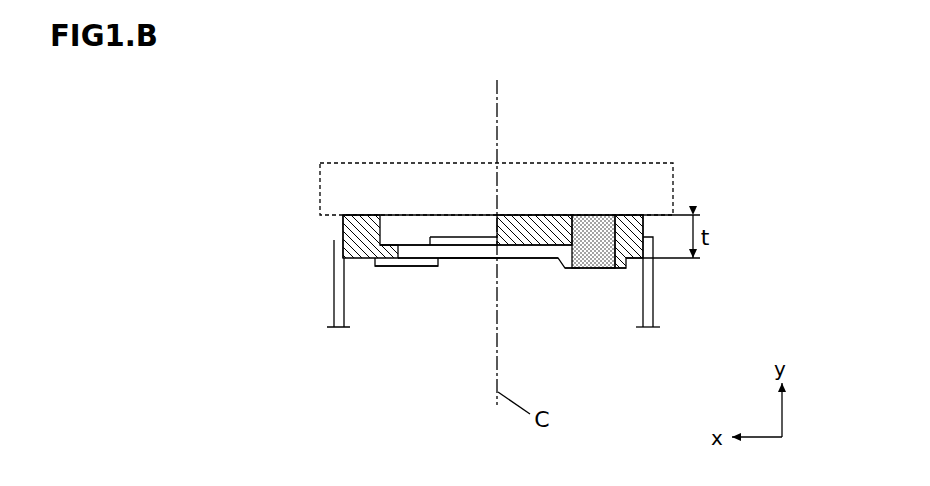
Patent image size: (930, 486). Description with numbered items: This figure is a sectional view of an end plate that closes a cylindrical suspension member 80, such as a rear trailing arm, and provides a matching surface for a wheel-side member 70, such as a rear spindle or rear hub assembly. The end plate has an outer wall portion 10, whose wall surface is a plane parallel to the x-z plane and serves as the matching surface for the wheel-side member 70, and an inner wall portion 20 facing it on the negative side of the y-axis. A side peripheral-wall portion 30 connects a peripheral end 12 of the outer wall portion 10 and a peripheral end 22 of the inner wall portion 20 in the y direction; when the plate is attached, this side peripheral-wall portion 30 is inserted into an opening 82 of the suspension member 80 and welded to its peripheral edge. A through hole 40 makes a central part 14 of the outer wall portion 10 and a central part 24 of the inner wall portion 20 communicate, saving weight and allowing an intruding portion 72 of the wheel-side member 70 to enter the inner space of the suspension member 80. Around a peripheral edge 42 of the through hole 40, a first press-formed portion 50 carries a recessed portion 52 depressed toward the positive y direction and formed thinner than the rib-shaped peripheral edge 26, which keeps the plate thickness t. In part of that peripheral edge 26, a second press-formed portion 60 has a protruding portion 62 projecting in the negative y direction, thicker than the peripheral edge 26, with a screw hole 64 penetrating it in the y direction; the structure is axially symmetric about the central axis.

The outer wall portion 10 is at (376, 212).
The peripheral end 12 is at (632, 214).
The central part 14 is at (515, 215).
The inner wall portion 20 is at (455, 261).
The peripheral end 22 is at (350, 262).
The central part 24 is at (486, 260).
The peripheral edge 26 is at (630, 262).
The side peripheral-wall portion 30 is at (340, 233).
The through hole 40 is at (384, 226).
The peripheral edge 42 is at (373, 263).
The first press-formed portion 50 is at (502, 260).
The recessed portion 52 is at (527, 260).
The second press-formed portion 60 is at (613, 270).
The protruding portion 62 is at (408, 268).
The screw hole 64 is at (583, 226).
The wheel-side member 70 is at (371, 162).
The intruding portion 72 is at (455, 228).
The suspension member 80 is at (658, 310).
The opening 82 is at (654, 327).